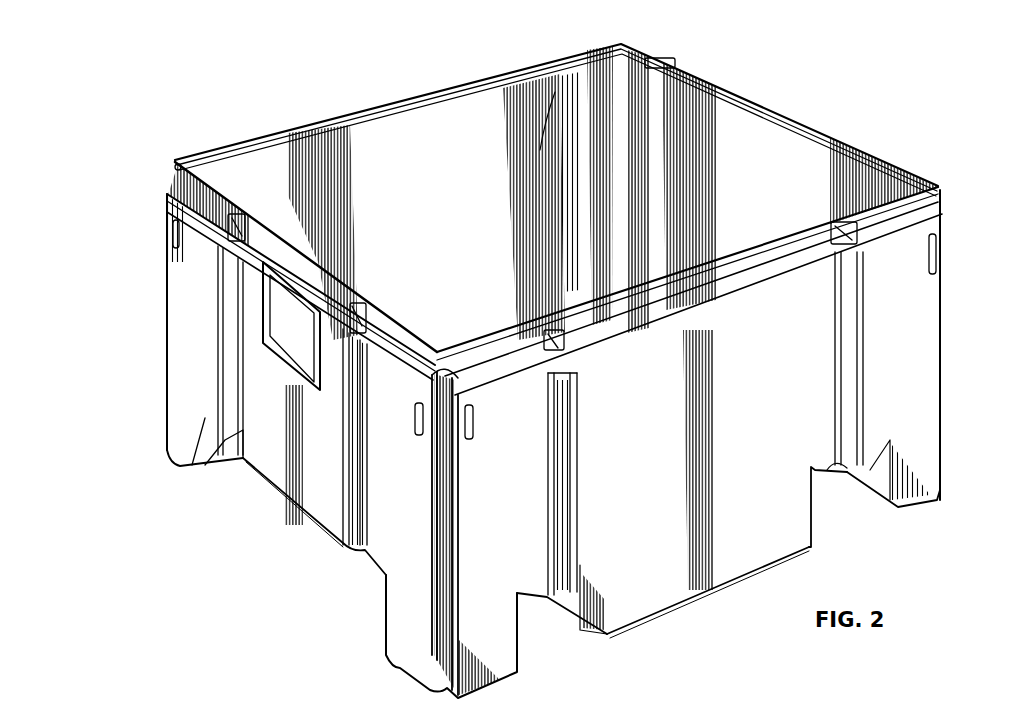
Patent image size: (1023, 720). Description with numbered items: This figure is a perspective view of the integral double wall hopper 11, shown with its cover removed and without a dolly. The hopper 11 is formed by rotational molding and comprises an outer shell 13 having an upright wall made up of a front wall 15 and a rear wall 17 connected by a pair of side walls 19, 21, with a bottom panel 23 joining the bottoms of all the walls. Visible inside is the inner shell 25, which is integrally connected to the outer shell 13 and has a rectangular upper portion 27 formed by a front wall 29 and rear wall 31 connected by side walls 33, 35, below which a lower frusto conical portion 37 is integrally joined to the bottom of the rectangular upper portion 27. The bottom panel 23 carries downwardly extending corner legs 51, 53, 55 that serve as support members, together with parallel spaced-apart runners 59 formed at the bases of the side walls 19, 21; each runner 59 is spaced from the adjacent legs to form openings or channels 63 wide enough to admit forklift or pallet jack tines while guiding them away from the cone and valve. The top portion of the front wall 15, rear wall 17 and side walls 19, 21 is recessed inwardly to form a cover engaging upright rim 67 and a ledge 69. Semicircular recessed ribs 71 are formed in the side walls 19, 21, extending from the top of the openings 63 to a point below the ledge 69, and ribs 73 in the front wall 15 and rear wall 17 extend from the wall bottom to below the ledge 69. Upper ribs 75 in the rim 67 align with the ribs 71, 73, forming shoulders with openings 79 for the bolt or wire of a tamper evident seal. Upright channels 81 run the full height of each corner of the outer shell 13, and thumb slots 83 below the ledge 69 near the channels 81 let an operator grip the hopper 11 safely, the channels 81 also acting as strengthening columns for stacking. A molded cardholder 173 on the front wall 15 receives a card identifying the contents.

The double wall hopper 11 is at (961, 369).
The outer shell 13 is at (185, 400).
The front wall 15 is at (333, 507).
The rear wall 17 is at (813, 123).
The side wall 19 is at (713, 540).
The side wall 21 is at (352, 115).
The bottom panel 23 is at (568, 612).
The inner shell 25 is at (470, 122).
The rectangular upper portion 27 is at (555, 92).
The front wall 29 is at (320, 273).
The rear wall 31 is at (775, 140).
The side wall 33 is at (642, 292).
The side wall 35 is at (425, 172).
The lower frusto conical portion 37 is at (612, 292).
The leg 51 is at (180, 463).
The leg 53 is at (410, 655).
The leg 55 is at (935, 500).
The runner 59 is at (667, 590).
The opening or channel 63 is at (840, 495).
The cover engaging upright rim 67 is at (772, 268).
The ledge 69 is at (755, 283).
The rib 71 is at (852, 355).
The rib 73 is at (232, 397).
The upper rib 75 is at (232, 212).
The opening 79 is at (238, 218).
The upright channel 81 is at (625, 46).
The thumb slot 83 is at (180, 240).
The molded cardholder 173 is at (312, 382).